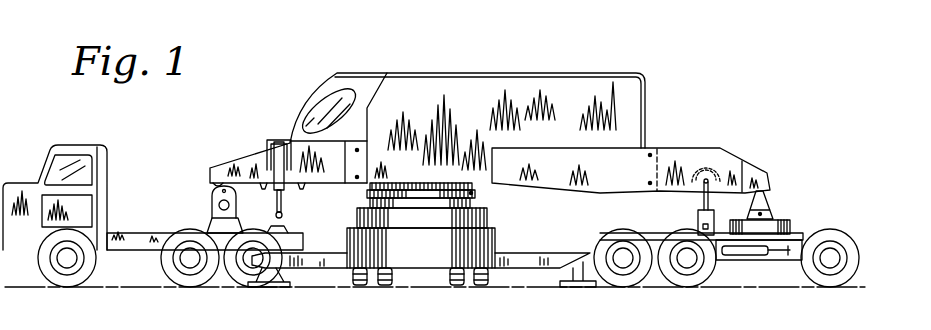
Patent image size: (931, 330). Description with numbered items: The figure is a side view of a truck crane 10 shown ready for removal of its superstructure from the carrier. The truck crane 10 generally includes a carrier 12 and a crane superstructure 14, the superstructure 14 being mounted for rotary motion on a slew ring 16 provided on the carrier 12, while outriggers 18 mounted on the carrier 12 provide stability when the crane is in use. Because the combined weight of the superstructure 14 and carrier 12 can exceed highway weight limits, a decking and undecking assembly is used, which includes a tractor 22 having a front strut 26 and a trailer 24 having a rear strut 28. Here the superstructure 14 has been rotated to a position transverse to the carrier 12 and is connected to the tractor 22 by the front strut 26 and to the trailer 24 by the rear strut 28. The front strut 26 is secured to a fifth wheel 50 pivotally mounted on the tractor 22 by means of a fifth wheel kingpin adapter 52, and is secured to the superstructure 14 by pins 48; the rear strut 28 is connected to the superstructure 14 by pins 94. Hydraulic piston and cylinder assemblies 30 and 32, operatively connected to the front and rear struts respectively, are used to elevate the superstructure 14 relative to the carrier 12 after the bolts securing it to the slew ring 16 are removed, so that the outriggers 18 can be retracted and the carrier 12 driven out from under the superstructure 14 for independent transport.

The truck crane 10 is at (422, 66).
The carrier 12 is at (421, 272).
The crane superstructure 14 is at (553, 86).
The slew ring 16 is at (471, 193).
The outriggers 18 is at (326, 262).
The tractor 22 is at (118, 231).
The trailer 24 is at (808, 231).
The front strut 26 is at (242, 153).
The rear strut 28 is at (694, 144).
The hydraulic piston and cylinder assembly 30 is at (295, 206).
The hydraulic piston and cylinder assembly 32 is at (694, 206).
The pins 48 is at (357, 150).
The fifth wheel 50 is at (213, 226).
The fifth wheel kingpin adapter 52 is at (201, 201).
The pins 94 is at (650, 183).